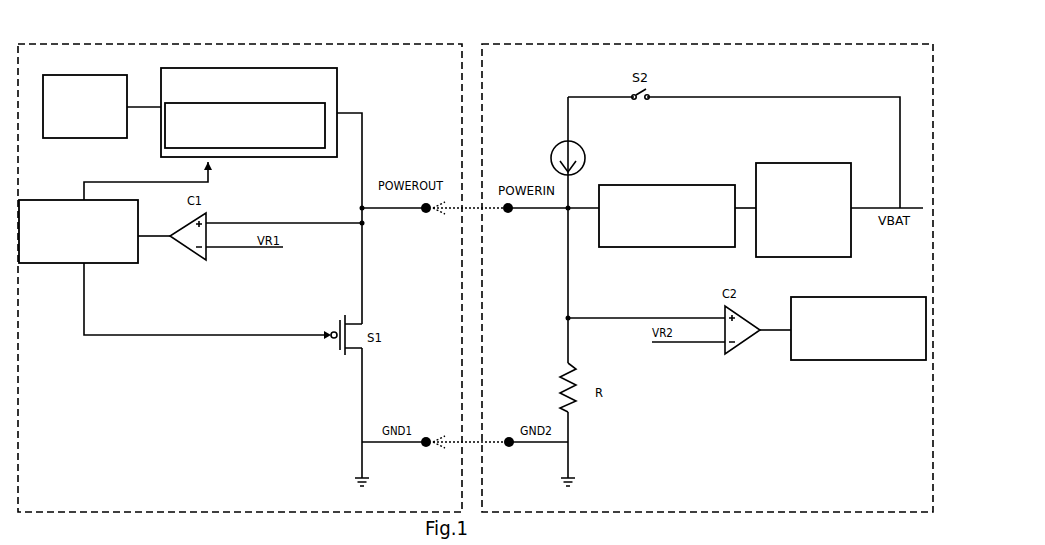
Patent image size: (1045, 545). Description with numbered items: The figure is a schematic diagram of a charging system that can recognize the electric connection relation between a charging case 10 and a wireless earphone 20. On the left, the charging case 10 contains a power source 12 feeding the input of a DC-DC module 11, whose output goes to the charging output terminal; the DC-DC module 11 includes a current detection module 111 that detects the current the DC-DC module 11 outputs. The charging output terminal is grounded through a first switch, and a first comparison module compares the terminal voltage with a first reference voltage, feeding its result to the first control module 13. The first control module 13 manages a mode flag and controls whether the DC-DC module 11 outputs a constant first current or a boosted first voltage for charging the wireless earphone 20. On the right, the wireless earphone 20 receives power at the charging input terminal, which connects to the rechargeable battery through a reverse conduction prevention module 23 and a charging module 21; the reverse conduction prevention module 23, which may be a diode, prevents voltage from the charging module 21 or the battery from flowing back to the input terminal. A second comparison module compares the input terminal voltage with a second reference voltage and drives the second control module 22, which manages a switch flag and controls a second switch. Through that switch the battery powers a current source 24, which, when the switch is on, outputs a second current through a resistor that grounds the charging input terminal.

The charging case 10 is at (286, 44).
The DC-DC module 11 is at (289, 70).
The current detection module 111 is at (280, 103).
The power source 12 is at (106, 75).
The first control module 13 is at (28, 200).
The wireless earphone 20 is at (730, 44).
The charging module 21 is at (797, 163).
The second control module 22 is at (862, 297).
The reverse conduction prevention module 23 is at (665, 185).
The current source 24 is at (580, 144).